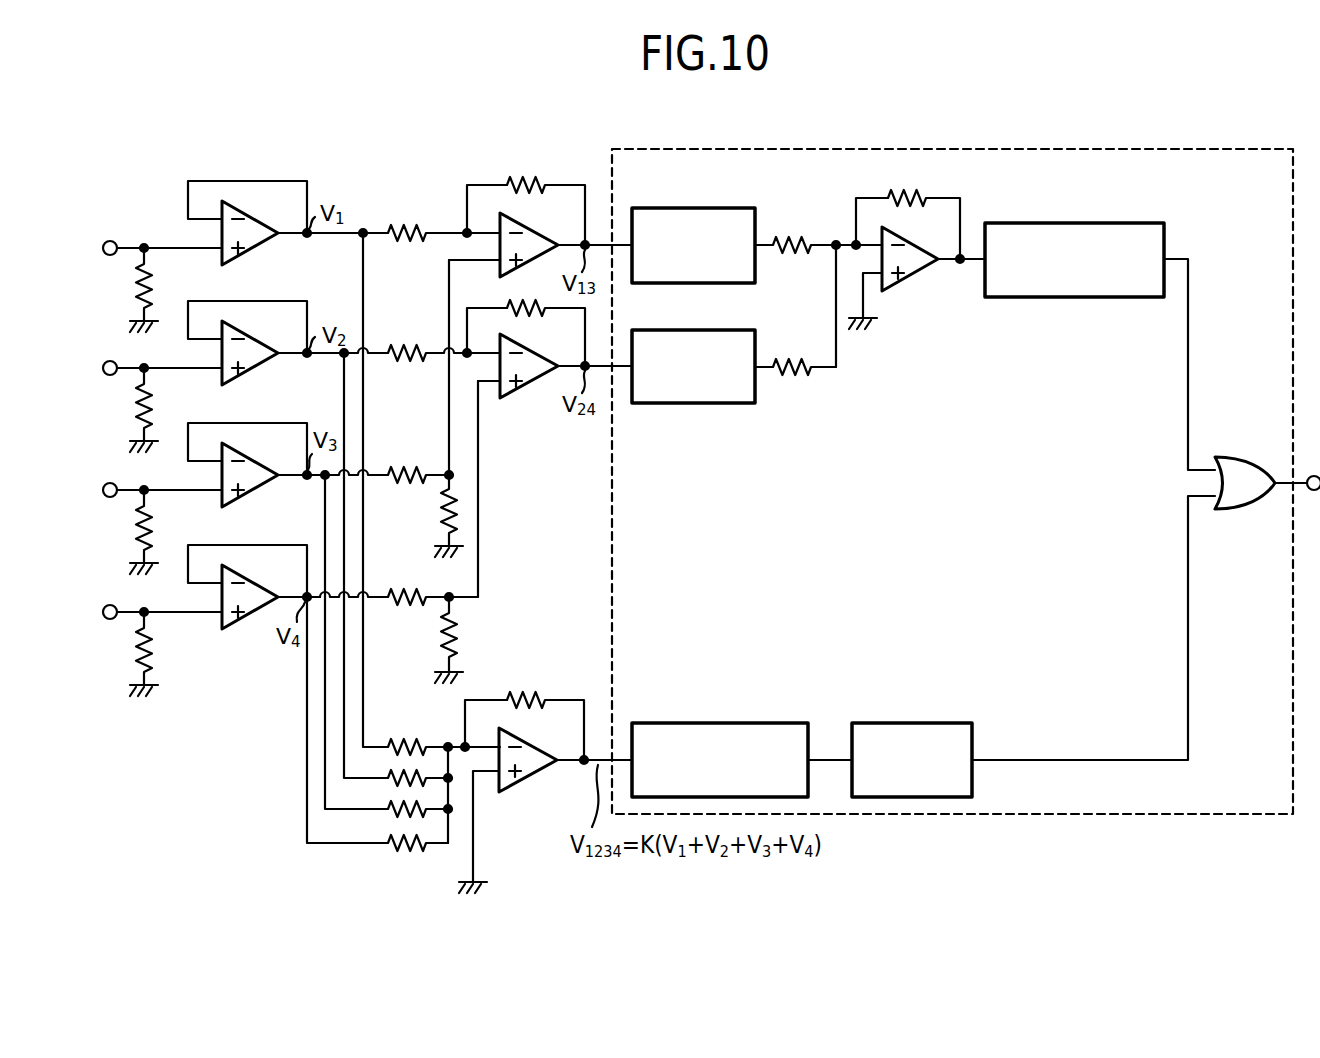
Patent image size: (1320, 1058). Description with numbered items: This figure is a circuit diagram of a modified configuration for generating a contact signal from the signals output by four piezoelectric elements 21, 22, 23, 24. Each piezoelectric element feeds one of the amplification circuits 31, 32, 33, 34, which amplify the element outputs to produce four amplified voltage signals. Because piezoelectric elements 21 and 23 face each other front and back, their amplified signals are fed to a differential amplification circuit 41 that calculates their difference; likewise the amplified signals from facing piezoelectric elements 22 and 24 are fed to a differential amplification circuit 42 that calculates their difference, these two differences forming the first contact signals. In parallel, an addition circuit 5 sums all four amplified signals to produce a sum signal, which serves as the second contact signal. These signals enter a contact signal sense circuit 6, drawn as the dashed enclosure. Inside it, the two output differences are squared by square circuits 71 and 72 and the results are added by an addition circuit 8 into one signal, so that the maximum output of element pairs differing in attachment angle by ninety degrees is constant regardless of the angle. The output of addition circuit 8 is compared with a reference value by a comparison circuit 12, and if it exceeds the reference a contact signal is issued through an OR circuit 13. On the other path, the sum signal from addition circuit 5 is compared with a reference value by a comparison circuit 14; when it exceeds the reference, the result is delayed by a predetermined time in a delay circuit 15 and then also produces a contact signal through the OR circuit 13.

The piezoelectric element 21 is at (110, 241).
The piezoelectric element 22 is at (110, 361).
The piezoelectric element 23 is at (110, 483).
The piezoelectric element 24 is at (110, 605).
The amplification circuit 31 is at (248, 252).
The amplification circuit 32 is at (248, 372).
The amplification circuit 33 is at (248, 494).
The amplification circuit 34 is at (248, 616).
The differential amplification circuit 41 is at (522, 224).
The differential amplification circuit 42 is at (522, 345).
The addition circuit 5 is at (523, 783).
The contact signal sense circuit 6 is at (1190, 150).
The square circuit 71 is at (705, 207).
The square circuit 72 is at (705, 329).
The addition circuit 8 is at (913, 275).
The comparison circuit 12 is at (1120, 222).
The OR circuit 13 is at (1243, 456).
The comparison circuit 14 is at (780, 722).
The delay circuit 15 is at (940, 722).